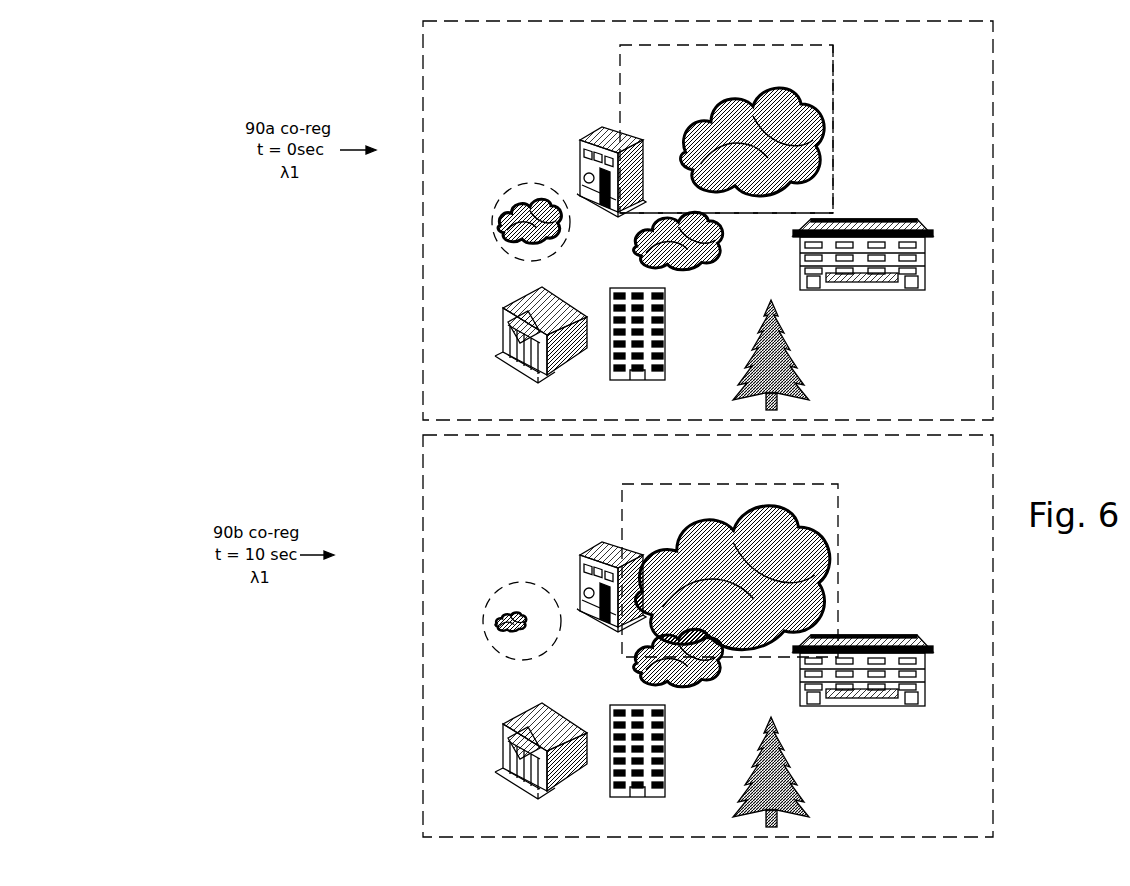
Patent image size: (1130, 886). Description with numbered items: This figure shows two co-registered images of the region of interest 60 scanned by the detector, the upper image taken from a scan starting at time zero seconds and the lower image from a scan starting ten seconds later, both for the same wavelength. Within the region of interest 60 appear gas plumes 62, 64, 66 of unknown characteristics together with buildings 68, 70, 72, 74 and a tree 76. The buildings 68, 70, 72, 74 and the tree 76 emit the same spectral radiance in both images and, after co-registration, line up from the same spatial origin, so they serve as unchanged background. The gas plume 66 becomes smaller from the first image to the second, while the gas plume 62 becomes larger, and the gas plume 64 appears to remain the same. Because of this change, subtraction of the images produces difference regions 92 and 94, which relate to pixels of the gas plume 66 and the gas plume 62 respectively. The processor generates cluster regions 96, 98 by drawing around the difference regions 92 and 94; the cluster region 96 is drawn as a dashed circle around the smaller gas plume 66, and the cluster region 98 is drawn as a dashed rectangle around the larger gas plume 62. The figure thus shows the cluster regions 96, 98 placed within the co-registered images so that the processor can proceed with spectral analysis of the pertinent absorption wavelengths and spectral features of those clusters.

The region of interest 60 is at (488, 98).
The gas plume 62 is at (822, 113).
The gas plume 64 is at (725, 244).
The gas plume 66 is at (510, 203).
The building 68 is at (630, 140).
The building 70 is at (862, 217).
The building 72 is at (500, 322).
The building 74 is at (668, 337).
The tree 76 is at (807, 363).
The difference region 92 is at (468, 720).
The difference region 94 is at (822, 113).
The cluster region 96 is at (507, 243).
The cluster region 98 is at (835, 155).